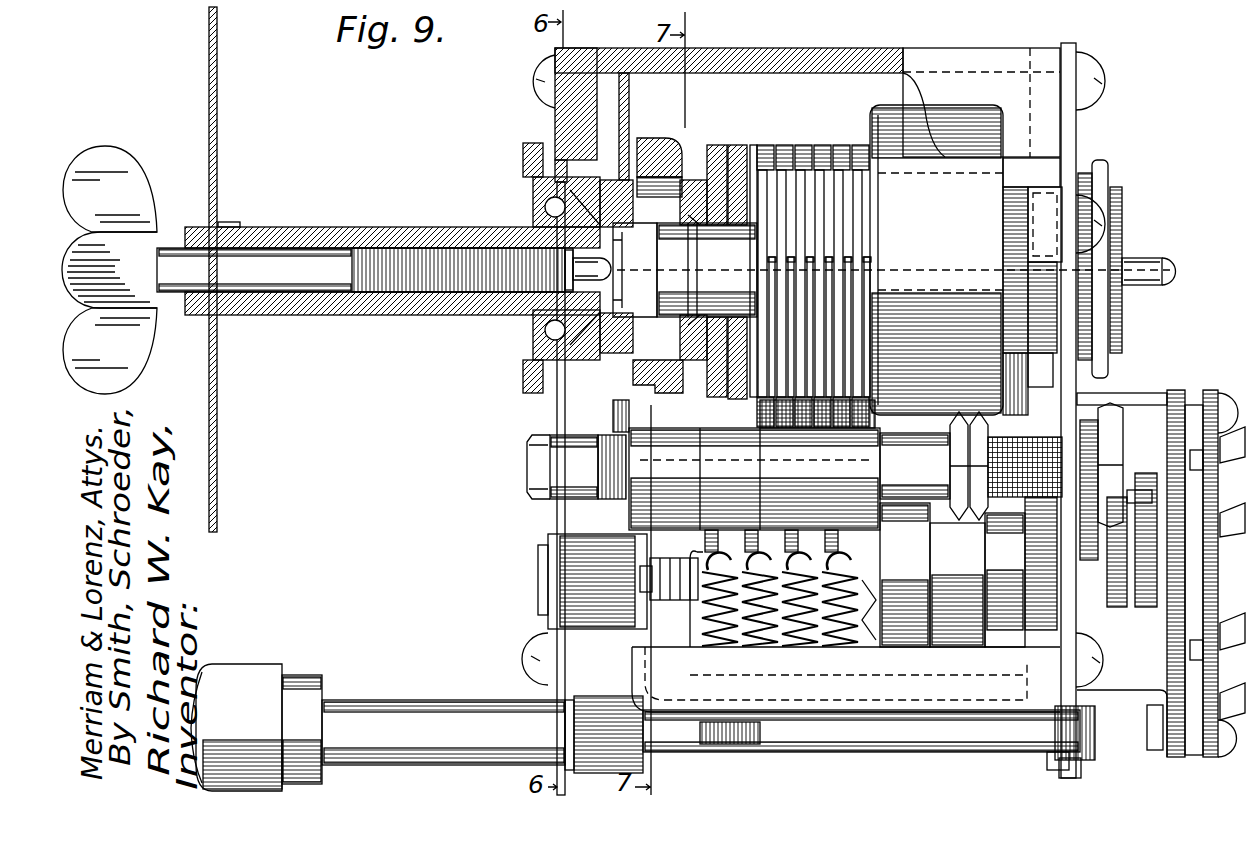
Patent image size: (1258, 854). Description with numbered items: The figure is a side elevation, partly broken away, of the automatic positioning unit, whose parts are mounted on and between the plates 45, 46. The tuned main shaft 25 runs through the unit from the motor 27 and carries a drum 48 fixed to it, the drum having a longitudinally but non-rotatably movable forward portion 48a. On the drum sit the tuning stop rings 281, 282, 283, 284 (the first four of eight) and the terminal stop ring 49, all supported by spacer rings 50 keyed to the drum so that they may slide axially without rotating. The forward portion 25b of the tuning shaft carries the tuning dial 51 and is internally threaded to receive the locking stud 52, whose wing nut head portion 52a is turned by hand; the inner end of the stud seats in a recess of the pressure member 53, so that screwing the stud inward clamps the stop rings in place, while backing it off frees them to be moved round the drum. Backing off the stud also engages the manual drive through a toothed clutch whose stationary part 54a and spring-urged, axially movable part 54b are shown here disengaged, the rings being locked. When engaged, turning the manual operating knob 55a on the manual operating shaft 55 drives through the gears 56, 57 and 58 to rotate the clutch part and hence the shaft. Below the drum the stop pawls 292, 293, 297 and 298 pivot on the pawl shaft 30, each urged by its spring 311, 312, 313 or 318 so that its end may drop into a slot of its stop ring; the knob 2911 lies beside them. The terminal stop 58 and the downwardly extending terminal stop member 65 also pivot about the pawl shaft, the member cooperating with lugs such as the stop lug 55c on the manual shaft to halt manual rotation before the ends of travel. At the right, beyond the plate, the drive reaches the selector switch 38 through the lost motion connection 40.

The tuning dial 51 is at (217, 129).
The wing nut head portion 52a is at (130, 157).
The forward portion of the tuning shaft 25b is at (337, 228).
The locking stud 52 is at (410, 317).
The mounting plate 45 is at (573, 118).
The mounting plate 46 is at (1068, 126).
The motor 27 is at (952, 216).
The main tuning shaft 25 is at (743, 252).
The terminal stop ring 49 is at (692, 158).
The pressure member 53 is at (637, 280).
The drum 48 is at (732, 240).
The tuning stop ring 281 is at (716, 145).
The tuning stop ring 282 is at (736, 145).
The tuning stop ring 283 is at (762, 145).
The tuning stop ring 284 is at (781, 150).
The spacer rings 50 is at (797, 165).
The stationary clutch part 54a is at (610, 355).
The movable clutch part 54b is at (540, 390).
The forward portion of the drum 48a is at (643, 358).
The gear and terminal stop 58 is at (612, 415).
The pawl shaft 30 is at (545, 453).
The stop pawl 293 is at (760, 462).
The stop pawl 292 is at (690, 500).
The knob 2911 is at (670, 564).
The stop pawl 297 is at (840, 448).
The stop pawl 298 is at (862, 475).
The gear 57 is at (610, 568).
The terminal stop member 65 is at (691, 640).
The spring 311 is at (720, 592).
The spring 312 is at (752, 640).
The spring 313 is at (800, 640).
The spring 318 is at (872, 640).
The stop lug 55c is at (705, 748).
The gear 56 is at (612, 765).
The manual operating shaft 55 is at (392, 686).
The manual operating knob 55a is at (262, 668).
The lost motion connection 40 is at (1136, 614).
The selector switch 38 is at (1183, 385).